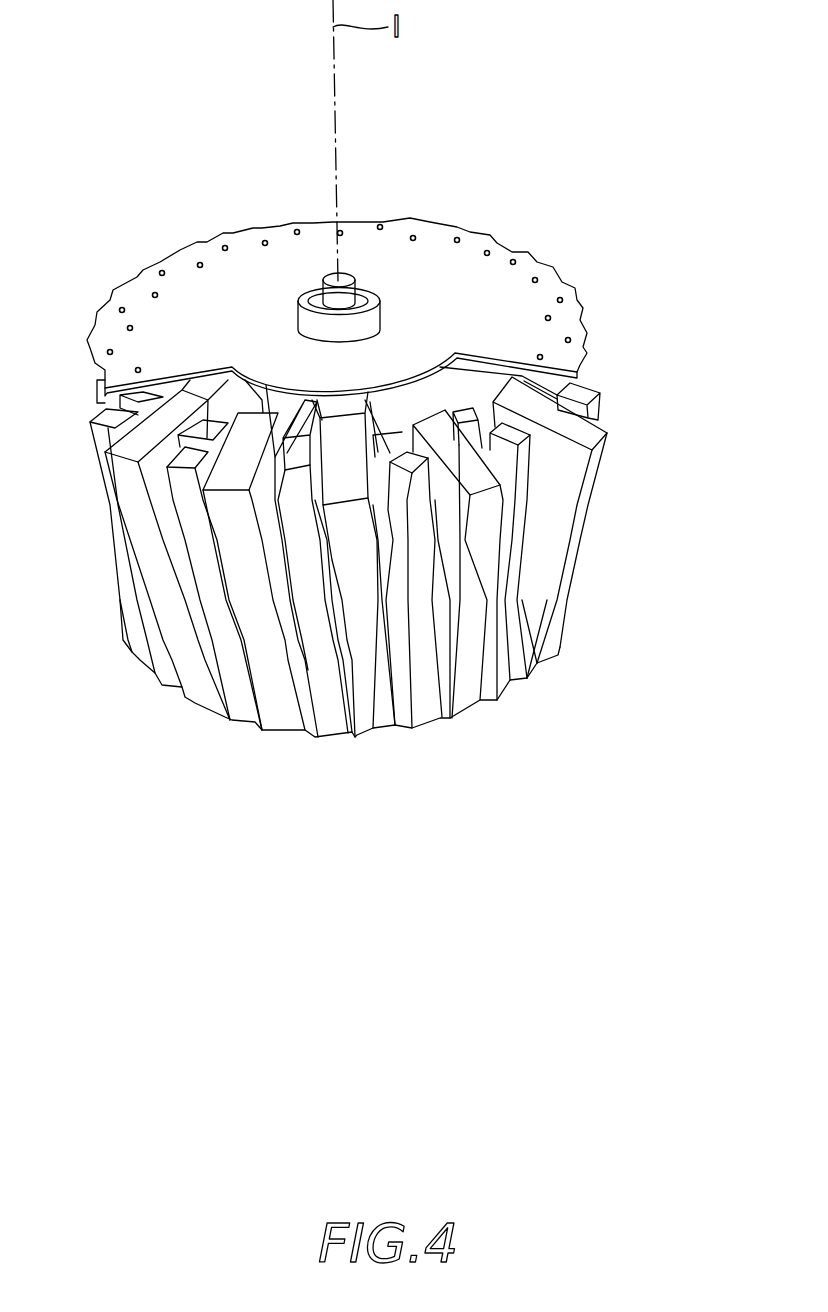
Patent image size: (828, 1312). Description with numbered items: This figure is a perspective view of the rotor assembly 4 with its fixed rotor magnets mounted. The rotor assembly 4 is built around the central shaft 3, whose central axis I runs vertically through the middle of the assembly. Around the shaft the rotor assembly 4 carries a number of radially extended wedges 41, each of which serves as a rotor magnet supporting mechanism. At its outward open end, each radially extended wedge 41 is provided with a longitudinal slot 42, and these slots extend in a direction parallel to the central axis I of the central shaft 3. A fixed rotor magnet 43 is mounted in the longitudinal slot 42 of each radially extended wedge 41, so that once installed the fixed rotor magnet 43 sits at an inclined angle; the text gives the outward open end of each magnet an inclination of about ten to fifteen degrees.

The central shaft 3 is at (342, 282).
The rotor assembly 4 is at (553, 292).
The radially extended wedge 41 is at (393, 643).
The longitudinal slot 42 is at (391, 445).
The fixed rotor magnet 43 is at (425, 695).